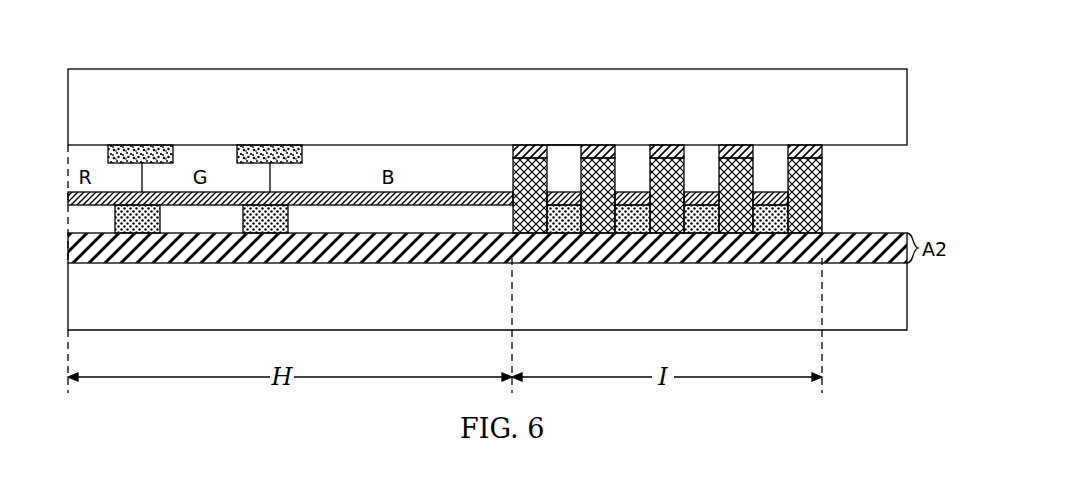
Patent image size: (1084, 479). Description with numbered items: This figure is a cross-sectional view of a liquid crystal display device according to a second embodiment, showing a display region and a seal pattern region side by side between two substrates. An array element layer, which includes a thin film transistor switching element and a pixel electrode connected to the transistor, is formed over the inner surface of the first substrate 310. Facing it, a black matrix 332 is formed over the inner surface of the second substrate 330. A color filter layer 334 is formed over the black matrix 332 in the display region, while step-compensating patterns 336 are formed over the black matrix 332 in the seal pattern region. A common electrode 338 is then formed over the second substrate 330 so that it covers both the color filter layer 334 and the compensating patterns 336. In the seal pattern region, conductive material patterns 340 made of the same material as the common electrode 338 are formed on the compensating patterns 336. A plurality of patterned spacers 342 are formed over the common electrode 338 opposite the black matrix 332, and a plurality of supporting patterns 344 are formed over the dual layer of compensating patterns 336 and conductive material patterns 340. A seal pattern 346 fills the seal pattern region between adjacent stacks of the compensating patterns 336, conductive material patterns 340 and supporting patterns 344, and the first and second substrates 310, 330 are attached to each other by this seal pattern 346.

The first substrate 310 is at (838, 311).
The second substrate 330 is at (838, 128).
The black matrix 332 is at (148, 150).
The color filter layer 334 is at (378, 165).
The step-compensating patterns 336 is at (568, 160).
The common electrode 338 is at (380, 200).
The conductive material patterns 340 is at (545, 150).
The patterned spacers 342 is at (121, 258).
The supporting patterns 344 is at (568, 237).
The seal pattern 346 is at (520, 150).